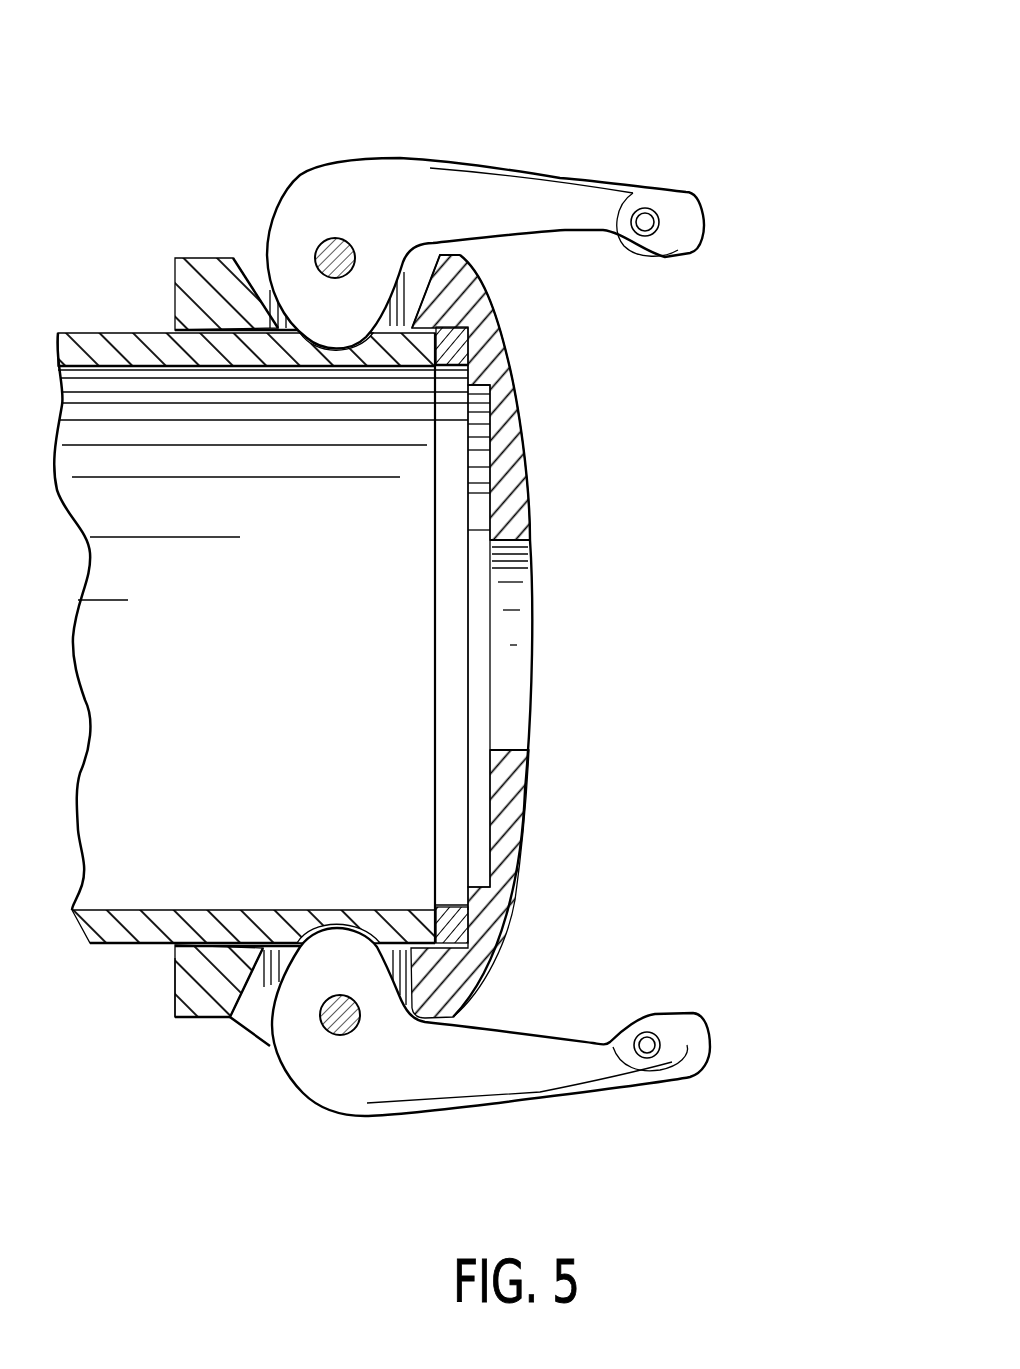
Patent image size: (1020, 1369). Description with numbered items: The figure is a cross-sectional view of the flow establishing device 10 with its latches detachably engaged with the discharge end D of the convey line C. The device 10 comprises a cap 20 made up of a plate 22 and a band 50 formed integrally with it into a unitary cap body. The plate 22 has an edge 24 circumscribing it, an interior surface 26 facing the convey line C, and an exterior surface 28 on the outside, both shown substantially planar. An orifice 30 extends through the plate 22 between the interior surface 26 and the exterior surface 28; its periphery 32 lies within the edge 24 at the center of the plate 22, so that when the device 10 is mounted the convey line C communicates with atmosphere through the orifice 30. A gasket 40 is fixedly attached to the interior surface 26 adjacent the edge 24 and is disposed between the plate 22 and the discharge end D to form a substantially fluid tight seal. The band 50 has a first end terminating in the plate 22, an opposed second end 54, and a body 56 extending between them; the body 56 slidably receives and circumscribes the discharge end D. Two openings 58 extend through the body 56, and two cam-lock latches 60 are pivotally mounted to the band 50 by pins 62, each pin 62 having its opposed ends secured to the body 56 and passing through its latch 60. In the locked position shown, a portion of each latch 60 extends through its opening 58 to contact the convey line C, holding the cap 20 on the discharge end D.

The flow establishing device 10 is at (772, 80).
The cap 20 is at (174, 257).
The plate 22 is at (528, 795).
The edge 24 is at (497, 928).
The interior surface 26 is at (490, 510).
The exterior surface 28 is at (530, 477).
The orifice 30 is at (527, 632).
The periphery 32 is at (530, 749).
The gasket 40 is at (477, 346).
The band 50 is at (182, 990).
The second end 54 is at (172, 300).
The body 56 is at (193, 1020).
The openings 58 is at (255, 1025).
The latches 60 is at (697, 223).
The pin 62 is at (345, 240).
The convey line C is at (272, 655).
The discharge end D is at (430, 907).